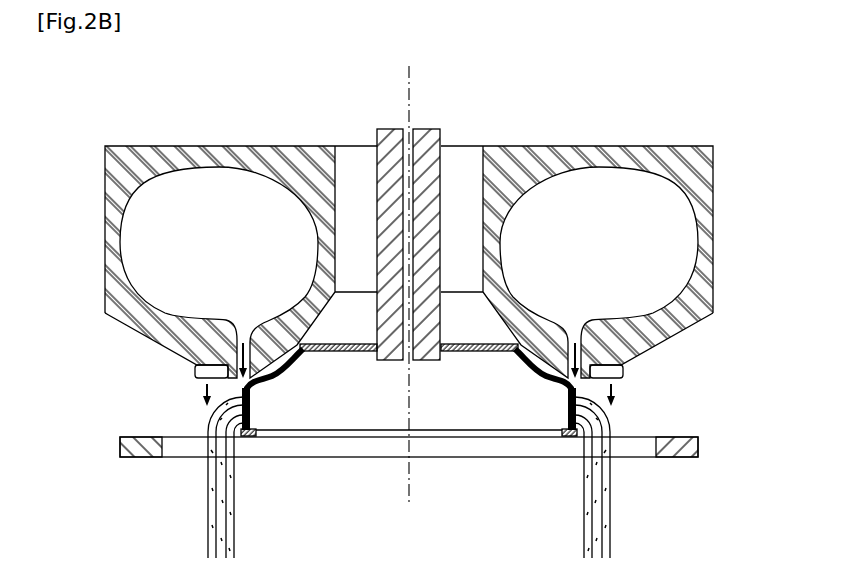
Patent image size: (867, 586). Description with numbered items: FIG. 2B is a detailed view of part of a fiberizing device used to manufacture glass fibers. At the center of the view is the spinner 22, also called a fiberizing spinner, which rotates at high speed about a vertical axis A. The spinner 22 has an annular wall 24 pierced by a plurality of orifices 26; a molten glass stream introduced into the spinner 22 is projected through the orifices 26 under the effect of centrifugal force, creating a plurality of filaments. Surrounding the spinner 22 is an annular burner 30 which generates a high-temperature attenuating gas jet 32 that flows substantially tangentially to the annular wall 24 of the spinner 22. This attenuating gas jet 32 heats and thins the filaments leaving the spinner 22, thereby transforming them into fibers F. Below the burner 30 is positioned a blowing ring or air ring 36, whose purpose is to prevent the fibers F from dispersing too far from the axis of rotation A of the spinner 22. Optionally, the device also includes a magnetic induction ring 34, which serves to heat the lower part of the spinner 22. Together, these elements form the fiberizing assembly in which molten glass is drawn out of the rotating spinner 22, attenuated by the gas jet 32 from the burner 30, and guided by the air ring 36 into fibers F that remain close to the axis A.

The annular burner 30 is at (713, 258).
The attenuating gas jet 32 is at (242, 381).
The air ring 36 is at (623, 372).
The spinner 22 is at (477, 401).
The annular wall 24 is at (575, 438).
The orifices 26 is at (258, 421).
The magnetic induction ring 34 is at (698, 442).
The fibers F is at (208, 479).
The axis A is at (409, 299).